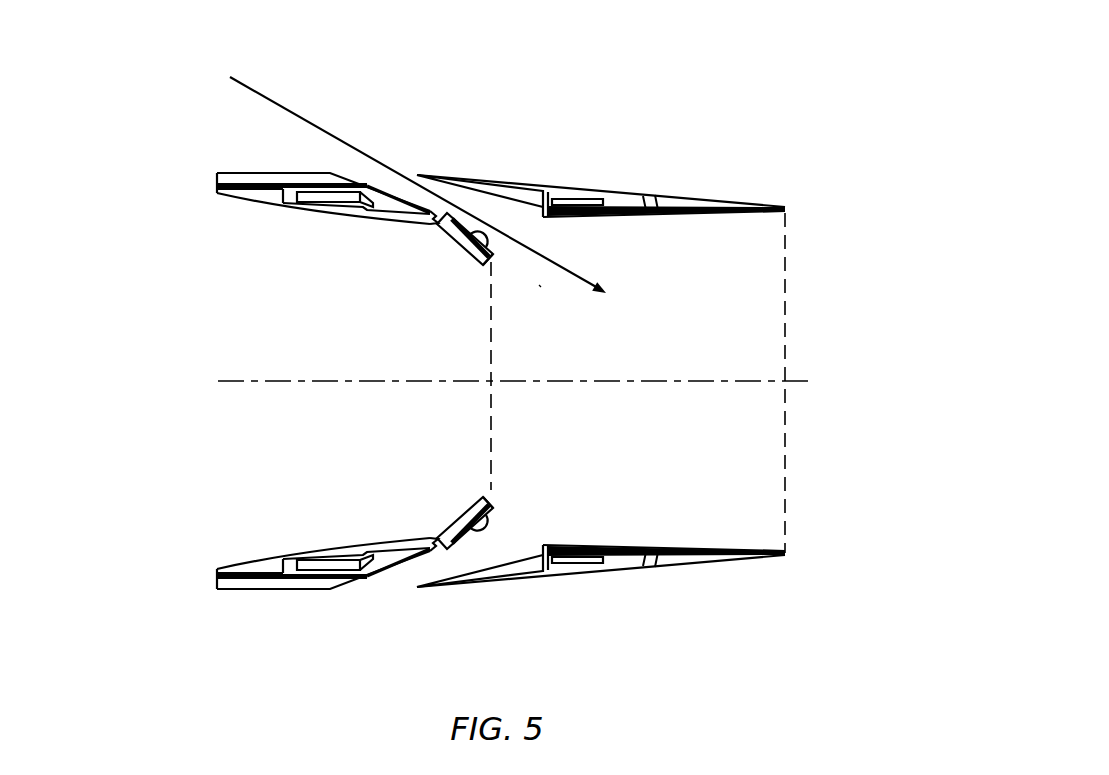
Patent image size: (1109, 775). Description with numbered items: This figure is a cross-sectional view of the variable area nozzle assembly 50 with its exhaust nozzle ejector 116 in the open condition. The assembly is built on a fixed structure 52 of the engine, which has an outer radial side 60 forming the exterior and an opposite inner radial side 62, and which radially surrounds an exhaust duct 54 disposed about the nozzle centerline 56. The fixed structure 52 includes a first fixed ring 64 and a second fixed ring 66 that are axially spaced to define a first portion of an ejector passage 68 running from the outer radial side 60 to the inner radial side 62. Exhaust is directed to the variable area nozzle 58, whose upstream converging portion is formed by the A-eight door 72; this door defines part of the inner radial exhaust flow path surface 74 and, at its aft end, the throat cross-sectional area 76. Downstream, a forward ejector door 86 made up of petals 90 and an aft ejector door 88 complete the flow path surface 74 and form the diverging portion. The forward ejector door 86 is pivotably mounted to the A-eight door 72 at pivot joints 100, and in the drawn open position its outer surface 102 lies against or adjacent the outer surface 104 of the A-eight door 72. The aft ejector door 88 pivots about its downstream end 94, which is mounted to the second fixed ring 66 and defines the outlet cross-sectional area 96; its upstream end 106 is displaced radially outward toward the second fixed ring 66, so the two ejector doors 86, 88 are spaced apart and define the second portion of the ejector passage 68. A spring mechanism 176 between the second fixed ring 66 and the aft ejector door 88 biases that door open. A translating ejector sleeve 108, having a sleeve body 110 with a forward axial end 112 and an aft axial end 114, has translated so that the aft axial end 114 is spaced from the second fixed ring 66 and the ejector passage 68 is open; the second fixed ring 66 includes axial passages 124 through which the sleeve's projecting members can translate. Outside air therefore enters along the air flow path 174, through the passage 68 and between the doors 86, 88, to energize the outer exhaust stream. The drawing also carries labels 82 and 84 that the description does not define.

The variable area nozzle assembly 50 is at (806, 139).
The fixed structure 52 is at (300, 250).
The exhaust duct 54 is at (395, 450).
The nozzle centerline 56 is at (237, 392).
The variable area nozzle 58 is at (546, 290).
The outer radial side 60 is at (241, 171).
The inner radial side 62 is at (261, 204).
The first fixed ring 64 is at (225, 210).
The second fixed ring 66 is at (514, 172).
The ejector passage 68 is at (447, 190).
The A8 door 72 is at (430, 513).
The inner radial exhaust flow path surface 74 is at (473, 502).
The throat cross-sectional area 76 is at (495, 403).
The inner block 82 is at (322, 194).
The upper plate edge 84 is at (400, 207).
The forward ejector door 86 is at (469, 542).
The aft ejector door 88 is at (684, 550).
The petals 90 is at (425, 248).
The downstream end 94 is at (805, 550).
The outlet cross-sectional area 96 is at (788, 276).
The pivot joints 100 is at (505, 272).
The outer surface 102 is at (481, 254).
The outer surface 104 is at (451, 248).
The upstream end 106 is at (560, 542).
The translating ejector sleeve 108 is at (254, 592).
The sleeve body 110 is at (290, 590).
The forward axial end 112 is at (217, 590).
The aft axial end 114 is at (345, 588).
The exhaust nozzle ejector 116 is at (418, 168).
The axial passages 124 is at (521, 577).
The air flow path 174 is at (267, 97).
The spring mechanism 176 is at (648, 196).